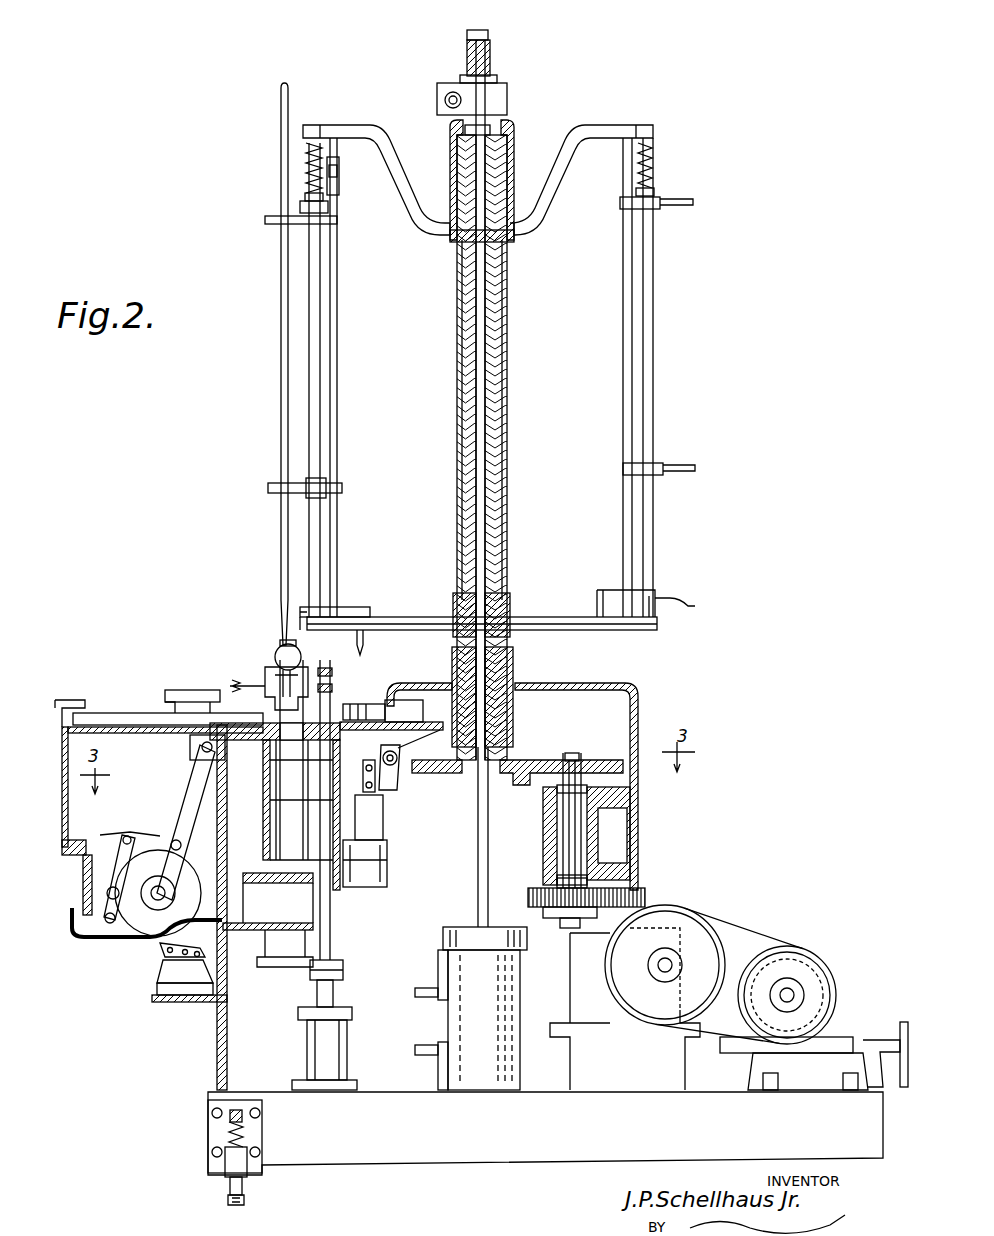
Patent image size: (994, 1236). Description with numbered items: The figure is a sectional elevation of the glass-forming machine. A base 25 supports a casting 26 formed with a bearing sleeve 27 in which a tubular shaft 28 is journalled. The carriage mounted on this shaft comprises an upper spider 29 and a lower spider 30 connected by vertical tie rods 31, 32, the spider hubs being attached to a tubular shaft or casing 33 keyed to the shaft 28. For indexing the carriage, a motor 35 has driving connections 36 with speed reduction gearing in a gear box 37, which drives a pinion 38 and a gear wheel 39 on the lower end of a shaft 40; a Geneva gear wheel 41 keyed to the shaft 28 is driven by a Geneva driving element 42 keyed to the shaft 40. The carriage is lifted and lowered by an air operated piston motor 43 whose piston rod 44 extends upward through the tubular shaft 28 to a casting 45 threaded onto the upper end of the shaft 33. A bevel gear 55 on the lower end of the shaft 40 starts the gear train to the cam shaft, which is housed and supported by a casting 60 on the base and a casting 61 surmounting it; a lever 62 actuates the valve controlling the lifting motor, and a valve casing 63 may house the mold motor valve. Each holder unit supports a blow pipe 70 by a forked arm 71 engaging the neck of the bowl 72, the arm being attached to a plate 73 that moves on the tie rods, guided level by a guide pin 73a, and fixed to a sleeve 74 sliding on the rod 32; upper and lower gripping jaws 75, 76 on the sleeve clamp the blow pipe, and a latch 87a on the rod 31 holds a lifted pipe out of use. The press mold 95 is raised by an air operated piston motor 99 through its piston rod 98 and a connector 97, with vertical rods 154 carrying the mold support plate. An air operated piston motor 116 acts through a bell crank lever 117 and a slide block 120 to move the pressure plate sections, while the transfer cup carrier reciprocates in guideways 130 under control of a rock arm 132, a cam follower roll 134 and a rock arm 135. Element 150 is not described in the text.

The base 25 is at (540, 1140).
The casting 26 is at (640, 712).
The bearing sleeve 27 is at (517, 667).
The tubular shaft 28 is at (496, 588).
The upper spider 29 is at (530, 218).
The lower spider 30 is at (523, 612).
The tie rod 31 is at (335, 420).
The tie rod 32 is at (306, 185).
The tubular shaft or casing 33 is at (507, 362).
The motor 35 is at (812, 955).
The driving connections 36 is at (737, 930).
The gear box 37 is at (583, 984).
The pinion 38 is at (645, 896).
The gear wheel 39 is at (537, 888).
The shaft 40 is at (565, 830).
The Geneva gear wheel 41 is at (452, 775).
The Geneva driving element 42 is at (528, 786).
The air operated piston motor 43 is at (465, 1030).
The piston rod 44 is at (478, 877).
The casting 45 is at (505, 155).
The bevel gear 55 is at (553, 920).
The casting 60 is at (230, 1000).
The casting 61 is at (145, 931).
The lever 62 is at (160, 943).
The valve casing 63 is at (165, 975).
The blow pipe 70 is at (281, 427).
The forked arm 71 is at (680, 618).
The bowl 72 is at (284, 655).
The plate or bracket 73 is at (350, 607).
The guide pin 73a is at (370, 646).
The sleeve or tubular shaft 74 is at (318, 360).
The upper gripping jaws 75 is at (265, 220).
The lower gripping jaws 76 is at (268, 488).
The latch 87a is at (338, 192).
The press mold 95 is at (268, 680).
The connector 97 is at (343, 972).
The piston rod 98 is at (335, 993).
The air operated piston motor 99 is at (318, 1055).
The air operated piston motor 116 is at (375, 858).
The bell crank lever 117 is at (395, 783).
The slide block 120 is at (410, 700).
The guideways 130 is at (125, 713).
The rock arm 132 is at (185, 792).
The cam follower roll 134 is at (100, 845).
The rock arm 135 is at (125, 835).
The cylinder 150 is at (275, 808).
The vertical rods 154 is at (262, 957).